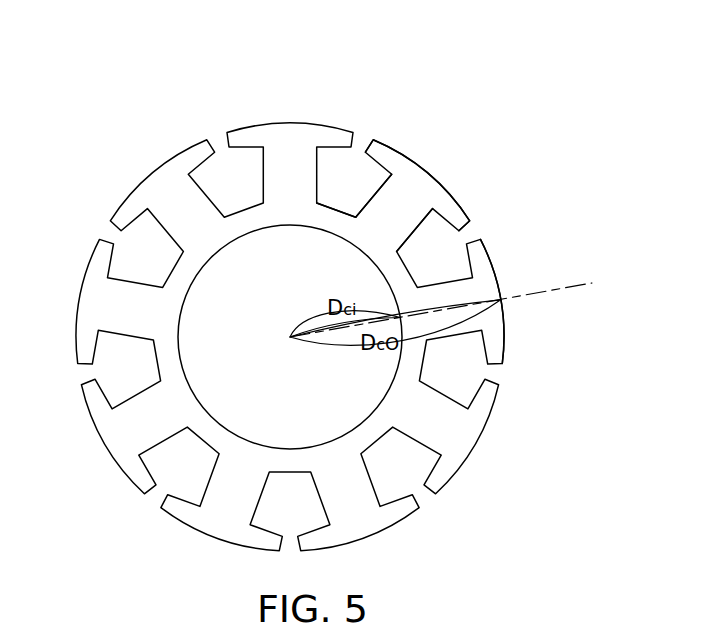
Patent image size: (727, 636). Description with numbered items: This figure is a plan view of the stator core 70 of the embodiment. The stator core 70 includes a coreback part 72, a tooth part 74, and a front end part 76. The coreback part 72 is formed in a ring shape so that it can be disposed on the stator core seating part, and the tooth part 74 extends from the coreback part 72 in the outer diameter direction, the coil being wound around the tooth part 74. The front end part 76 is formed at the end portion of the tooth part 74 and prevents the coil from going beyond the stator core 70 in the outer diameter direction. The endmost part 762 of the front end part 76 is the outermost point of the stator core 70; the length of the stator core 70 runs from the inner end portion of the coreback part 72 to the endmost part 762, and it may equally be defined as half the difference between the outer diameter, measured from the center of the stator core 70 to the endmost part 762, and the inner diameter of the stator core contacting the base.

The stator core 70 is at (418, 81).
The coreback part 72 is at (392, 217).
The tooth part 74 is at (330, 217).
The front end part 76 is at (443, 203).
The endmost part 762 is at (502, 300).